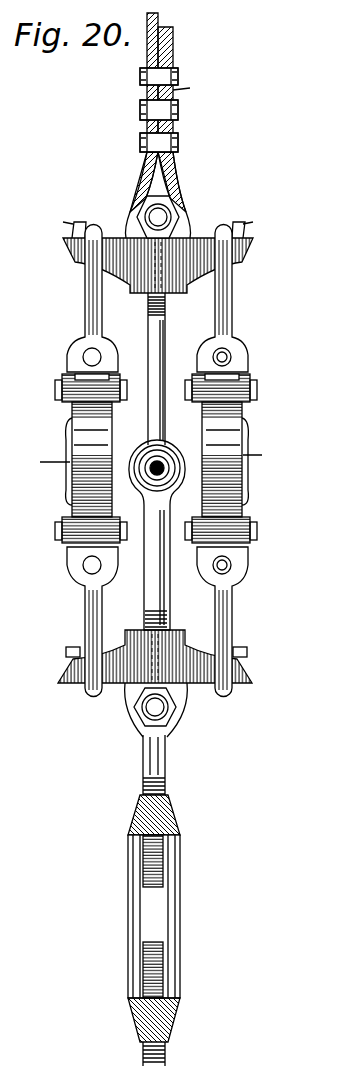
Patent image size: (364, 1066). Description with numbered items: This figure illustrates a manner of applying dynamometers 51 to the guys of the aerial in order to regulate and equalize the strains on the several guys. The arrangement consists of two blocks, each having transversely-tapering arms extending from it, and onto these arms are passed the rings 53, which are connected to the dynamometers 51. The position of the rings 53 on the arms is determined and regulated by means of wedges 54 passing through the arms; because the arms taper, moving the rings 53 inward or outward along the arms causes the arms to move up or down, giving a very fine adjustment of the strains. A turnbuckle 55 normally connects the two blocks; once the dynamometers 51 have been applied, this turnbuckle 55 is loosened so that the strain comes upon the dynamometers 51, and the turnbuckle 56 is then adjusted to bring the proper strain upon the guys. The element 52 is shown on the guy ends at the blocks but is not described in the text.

The dynamometer 51 is at (84, 438).
The rope eye and nut 52 is at (114, 238).
The ring 53 is at (228, 627).
The wedge 54 is at (67, 652).
The turnbuckle 55 is at (167, 350).
The turnbuckle 56 is at (175, 900).